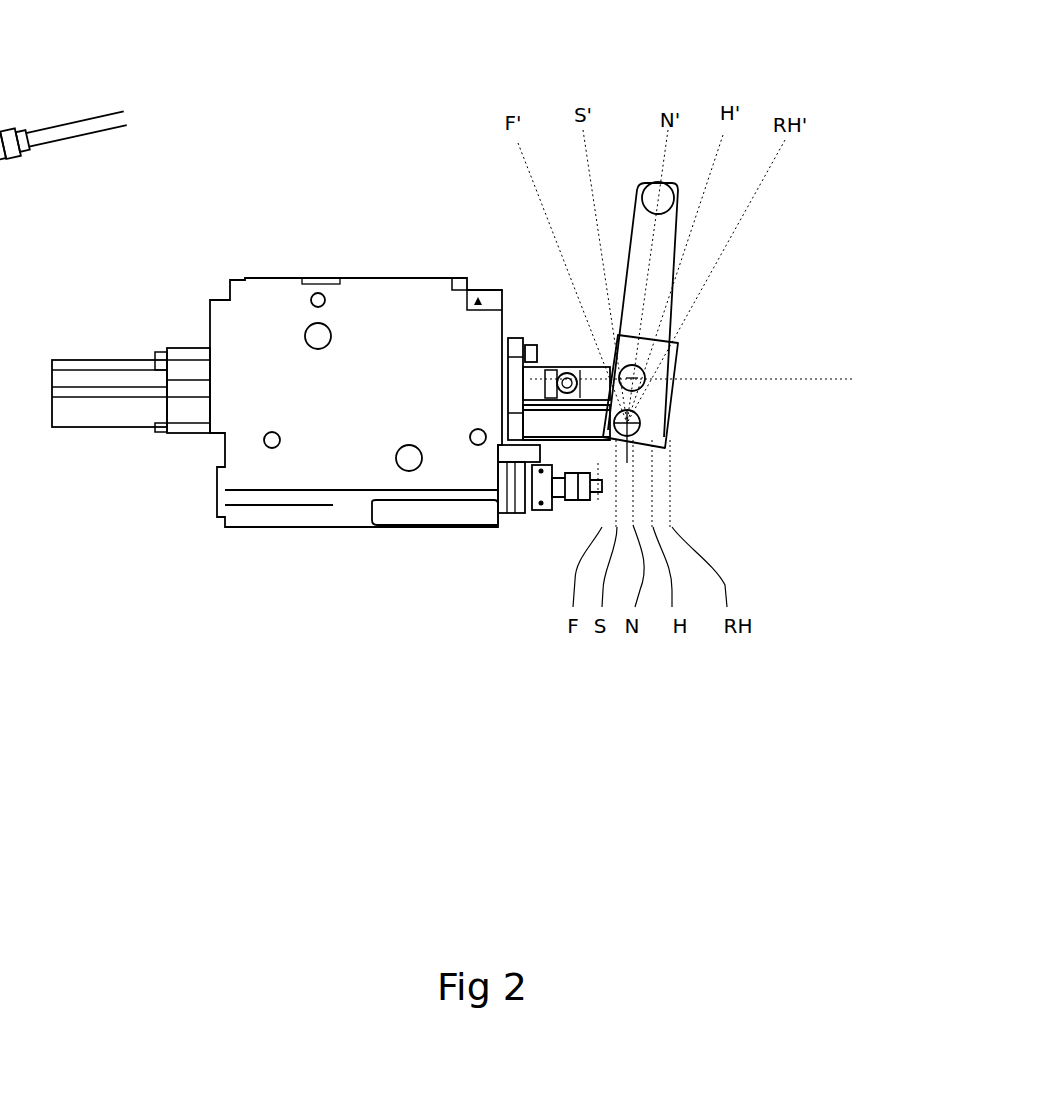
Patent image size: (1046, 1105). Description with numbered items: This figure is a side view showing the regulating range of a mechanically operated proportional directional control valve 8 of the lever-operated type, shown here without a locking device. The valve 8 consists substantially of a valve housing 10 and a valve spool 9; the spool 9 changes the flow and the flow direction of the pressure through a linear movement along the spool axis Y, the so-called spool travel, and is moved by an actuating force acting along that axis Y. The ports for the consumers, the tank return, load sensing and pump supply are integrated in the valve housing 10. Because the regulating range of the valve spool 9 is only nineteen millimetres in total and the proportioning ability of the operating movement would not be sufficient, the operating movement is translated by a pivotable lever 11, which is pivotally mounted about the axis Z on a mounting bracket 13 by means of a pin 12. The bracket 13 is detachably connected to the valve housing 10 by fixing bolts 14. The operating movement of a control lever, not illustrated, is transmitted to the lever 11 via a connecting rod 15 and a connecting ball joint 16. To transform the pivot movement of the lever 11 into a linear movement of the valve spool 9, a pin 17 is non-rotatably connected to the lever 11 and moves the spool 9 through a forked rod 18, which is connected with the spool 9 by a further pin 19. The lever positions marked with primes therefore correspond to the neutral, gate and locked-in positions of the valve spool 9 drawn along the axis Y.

The proportional directional control valve 8 is at (248, 258).
The valve spool 9 is at (530, 388).
The valve housing 10 is at (343, 332).
The pivotable lever 11 is at (652, 298).
The pin 12 is at (640, 423).
The mounting bracket 13 is at (542, 427).
The fixing bolts 14 is at (532, 345).
The connecting rod 15 is at (747, 173).
The connecting ball joint 16 is at (658, 203).
The pin 17 is at (645, 372).
The forked rod 18 is at (588, 377).
The further pin 19 is at (535, 377).
The spool axis Y is at (763, 379).
The pivot axis Z is at (630, 433).